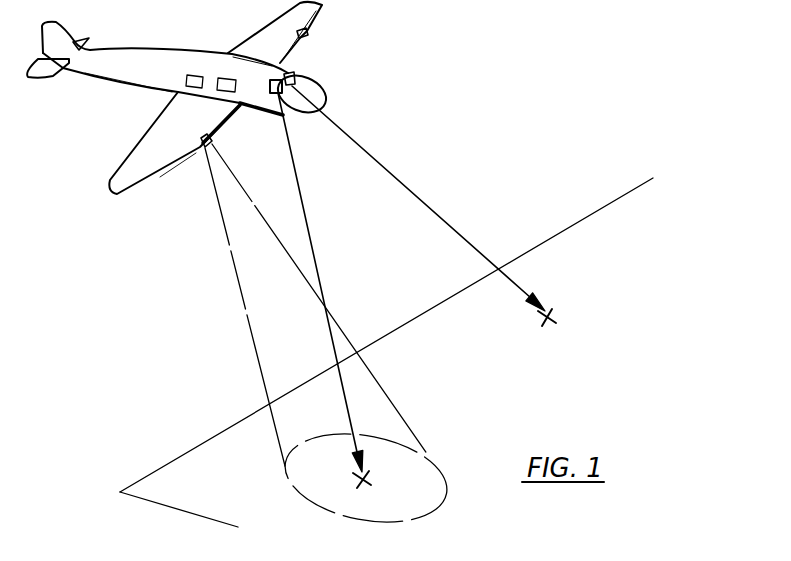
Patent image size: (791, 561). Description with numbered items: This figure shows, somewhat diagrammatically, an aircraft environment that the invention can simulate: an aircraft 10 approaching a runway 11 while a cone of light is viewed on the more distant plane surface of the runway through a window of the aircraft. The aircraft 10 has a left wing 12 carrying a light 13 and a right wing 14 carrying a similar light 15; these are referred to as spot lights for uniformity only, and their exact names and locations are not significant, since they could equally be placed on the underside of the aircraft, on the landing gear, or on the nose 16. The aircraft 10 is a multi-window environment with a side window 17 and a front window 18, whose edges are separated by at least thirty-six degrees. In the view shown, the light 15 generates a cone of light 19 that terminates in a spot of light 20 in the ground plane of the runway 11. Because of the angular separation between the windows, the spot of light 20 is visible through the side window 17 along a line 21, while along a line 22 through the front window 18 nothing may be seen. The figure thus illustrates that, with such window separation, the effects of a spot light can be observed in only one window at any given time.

The aircraft 10 is at (160, 52).
The runway 11 is at (213, 440).
The left wing 12 is at (262, 30).
The light 13 is at (310, 33).
The right wing 14 is at (145, 140).
The light 15 is at (200, 150).
The nose 16 is at (324, 98).
The side window 17 is at (270, 115).
The front window 18 is at (295, 77).
The cone of light 19 is at (250, 333).
The spot of light 20 is at (298, 482).
The line 21 is at (327, 292).
The line 22 is at (427, 205).